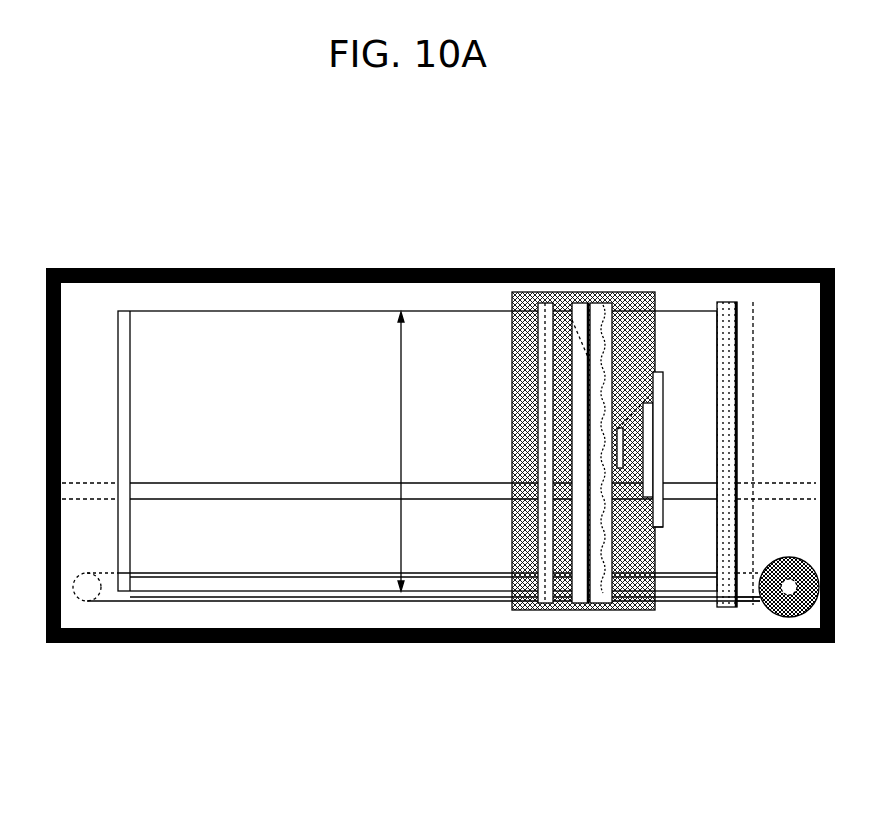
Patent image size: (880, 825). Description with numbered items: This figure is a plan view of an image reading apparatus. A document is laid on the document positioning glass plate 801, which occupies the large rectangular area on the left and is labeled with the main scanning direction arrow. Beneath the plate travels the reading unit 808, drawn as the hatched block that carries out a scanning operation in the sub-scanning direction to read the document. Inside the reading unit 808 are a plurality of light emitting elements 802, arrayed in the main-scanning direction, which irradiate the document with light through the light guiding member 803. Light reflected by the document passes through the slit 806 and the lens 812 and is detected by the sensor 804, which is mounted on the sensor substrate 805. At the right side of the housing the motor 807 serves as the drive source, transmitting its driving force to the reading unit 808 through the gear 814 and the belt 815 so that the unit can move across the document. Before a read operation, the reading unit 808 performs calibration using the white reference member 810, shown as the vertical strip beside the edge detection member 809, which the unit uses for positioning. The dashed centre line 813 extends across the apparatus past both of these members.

The document positioning glass plate 801 is at (257, 318).
The light emitting elements 802 is at (612, 328).
The light guiding member 803 is at (578, 303).
The sensor 804 is at (651, 425).
The sensor substrate 805 is at (656, 528).
The slit 806 is at (530, 562).
The motor 807 is at (790, 557).
The reading unit 808 is at (512, 303).
The edge detection member 809 is at (737, 329).
The white reference member 810 is at (753, 356).
The lens 812 is at (643, 399).
The scanning center line 813 is at (783, 483).
The gear 814 is at (790, 617).
The belt 815 is at (745, 605).